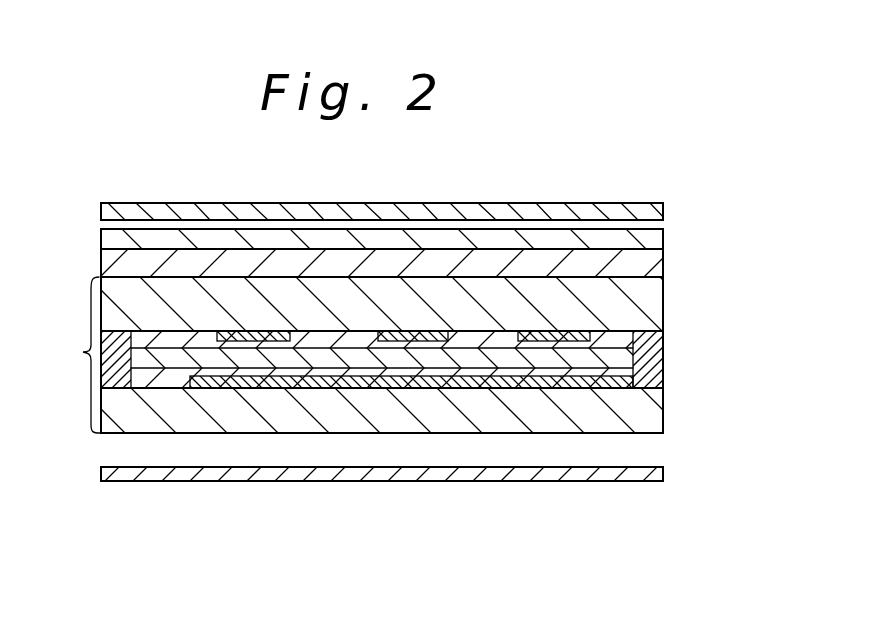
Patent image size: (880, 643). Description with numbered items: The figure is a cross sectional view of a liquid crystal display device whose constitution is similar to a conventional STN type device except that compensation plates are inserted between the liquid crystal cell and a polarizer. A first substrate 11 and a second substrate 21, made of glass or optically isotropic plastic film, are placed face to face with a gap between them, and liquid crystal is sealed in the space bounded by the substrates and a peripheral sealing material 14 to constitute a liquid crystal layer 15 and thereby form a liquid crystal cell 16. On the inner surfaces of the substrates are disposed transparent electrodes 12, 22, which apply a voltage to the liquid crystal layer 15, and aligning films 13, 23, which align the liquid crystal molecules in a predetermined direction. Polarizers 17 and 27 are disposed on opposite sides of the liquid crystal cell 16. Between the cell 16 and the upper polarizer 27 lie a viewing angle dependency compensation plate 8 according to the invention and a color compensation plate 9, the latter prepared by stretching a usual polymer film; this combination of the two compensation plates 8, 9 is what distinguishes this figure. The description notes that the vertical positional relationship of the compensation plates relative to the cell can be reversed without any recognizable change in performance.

The viewing angle dependency compensation plate 8 is at (652, 267).
The color compensation plate 9 is at (660, 237).
The first substrate 11 is at (647, 415).
The transparent electrode 12 is at (663, 382).
The aligning film 13 is at (462, 372).
The sealing material 14 is at (116, 365).
The liquid crystal layer 15 is at (178, 356).
The liquid crystal cell 16 is at (351, 355).
The polarizer 17 is at (663, 472).
The second substrate 21 is at (655, 293).
The transparent electrode 22 is at (583, 327).
The aligning film 23 is at (493, 340).
The polarizer 27 is at (663, 210).